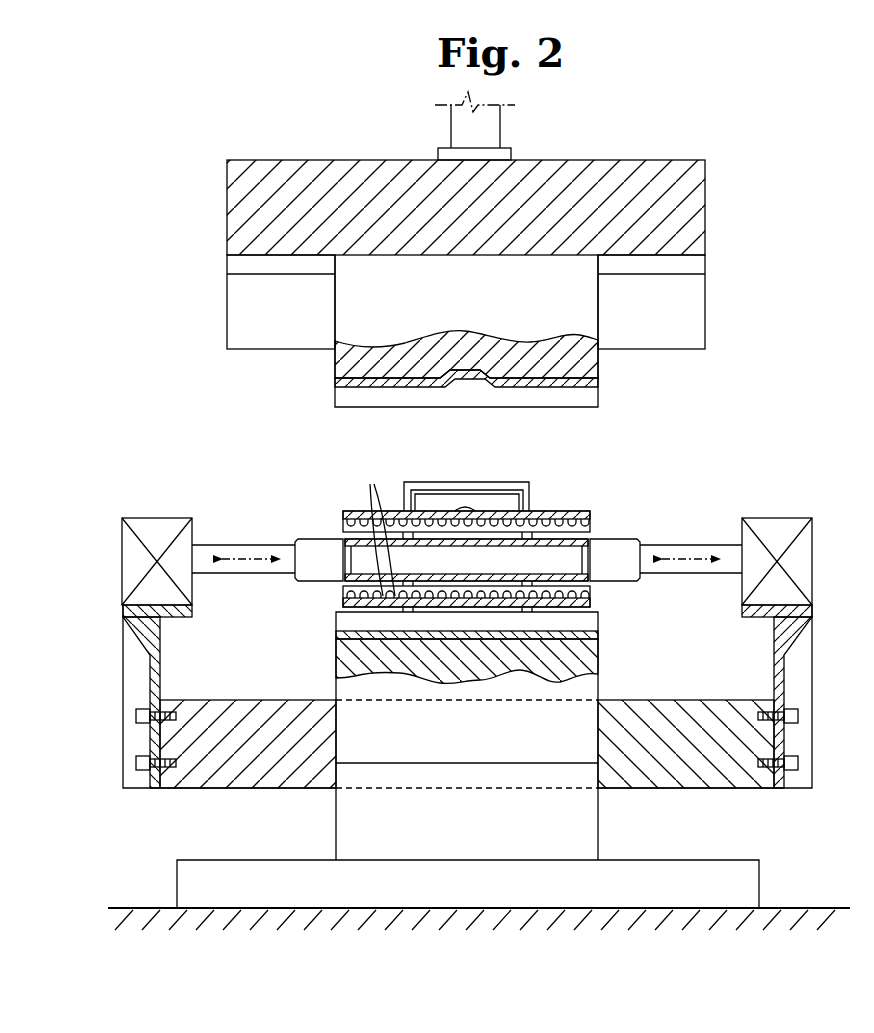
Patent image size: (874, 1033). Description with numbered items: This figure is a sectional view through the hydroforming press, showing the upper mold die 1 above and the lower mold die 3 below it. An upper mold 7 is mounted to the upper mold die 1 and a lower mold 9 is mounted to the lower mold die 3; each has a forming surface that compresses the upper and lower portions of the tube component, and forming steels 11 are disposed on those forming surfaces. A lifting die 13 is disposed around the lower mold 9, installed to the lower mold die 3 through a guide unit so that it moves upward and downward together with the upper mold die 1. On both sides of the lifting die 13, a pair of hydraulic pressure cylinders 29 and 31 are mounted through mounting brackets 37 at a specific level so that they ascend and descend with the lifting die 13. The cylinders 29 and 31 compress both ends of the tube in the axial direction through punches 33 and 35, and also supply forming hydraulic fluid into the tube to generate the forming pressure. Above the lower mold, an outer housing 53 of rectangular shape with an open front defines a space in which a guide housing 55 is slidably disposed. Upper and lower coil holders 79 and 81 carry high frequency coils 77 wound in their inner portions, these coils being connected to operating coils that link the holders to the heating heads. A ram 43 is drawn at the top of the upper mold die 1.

The upper mold die 1 is at (705, 212).
The lower mold die 3 is at (708, 860).
The upper mold 7 is at (598, 358).
The lower mold 9 is at (598, 667).
The forming steel 11 is at (598, 384).
The lifting die 13 is at (752, 790).
The hydraulic pressure cylinder 29 is at (122, 568).
The hydraulic pressure cylinder 31 is at (782, 518).
The punch 33 is at (316, 540).
The punch 35 is at (618, 540).
The mounting bracket 37 is at (130, 670).
The press ram 43 is at (500, 120).
The outer housing 53 is at (506, 484).
The guide housing 55 is at (462, 492).
The high frequency coil 77 is at (375, 527).
The upper coil holder 79 is at (576, 510).
The lower coil holder 81 is at (598, 606).